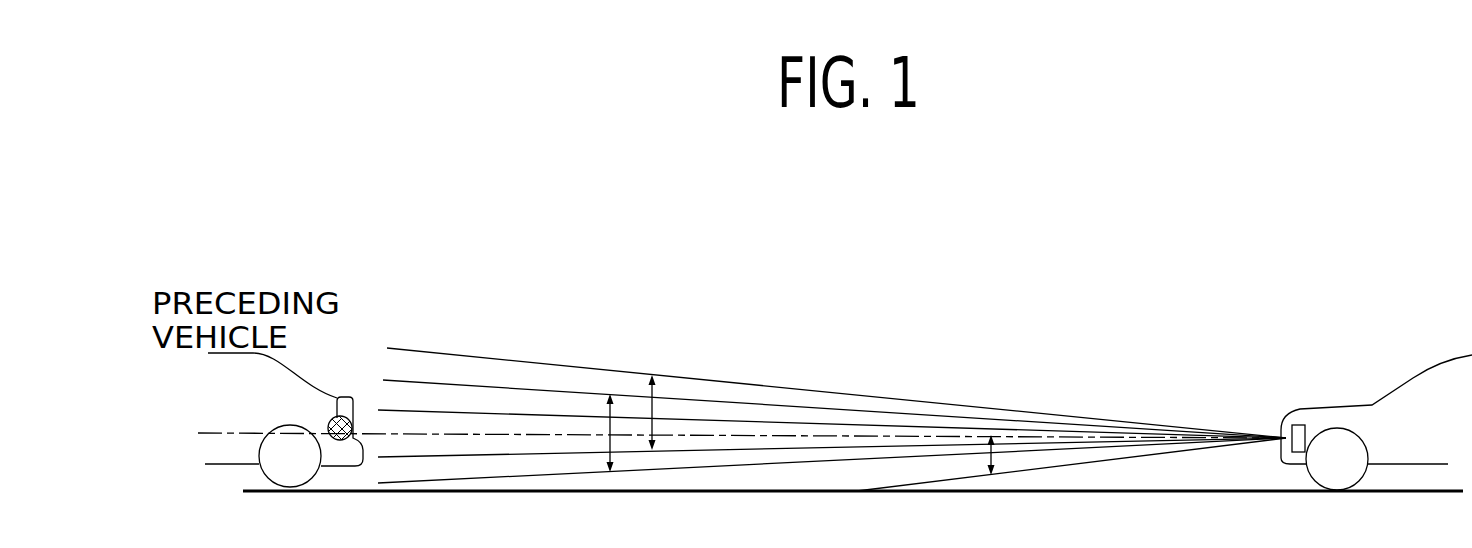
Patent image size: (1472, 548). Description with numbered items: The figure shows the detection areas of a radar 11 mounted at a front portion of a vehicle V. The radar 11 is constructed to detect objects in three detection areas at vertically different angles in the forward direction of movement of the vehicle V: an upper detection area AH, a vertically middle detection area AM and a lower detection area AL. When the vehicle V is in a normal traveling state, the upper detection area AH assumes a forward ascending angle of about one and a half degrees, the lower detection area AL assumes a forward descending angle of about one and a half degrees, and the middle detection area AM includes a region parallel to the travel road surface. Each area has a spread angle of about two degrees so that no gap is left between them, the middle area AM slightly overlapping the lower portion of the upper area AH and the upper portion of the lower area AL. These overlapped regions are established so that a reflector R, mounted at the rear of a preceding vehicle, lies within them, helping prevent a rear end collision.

The reflector R is at (342, 386).
The middle detection area AM is at (607, 422).
The upper detection area AH is at (650, 407).
The lower detection area AL is at (987, 450).
The radar 11 is at (1290, 427).
The vehicle V is at (1413, 380).